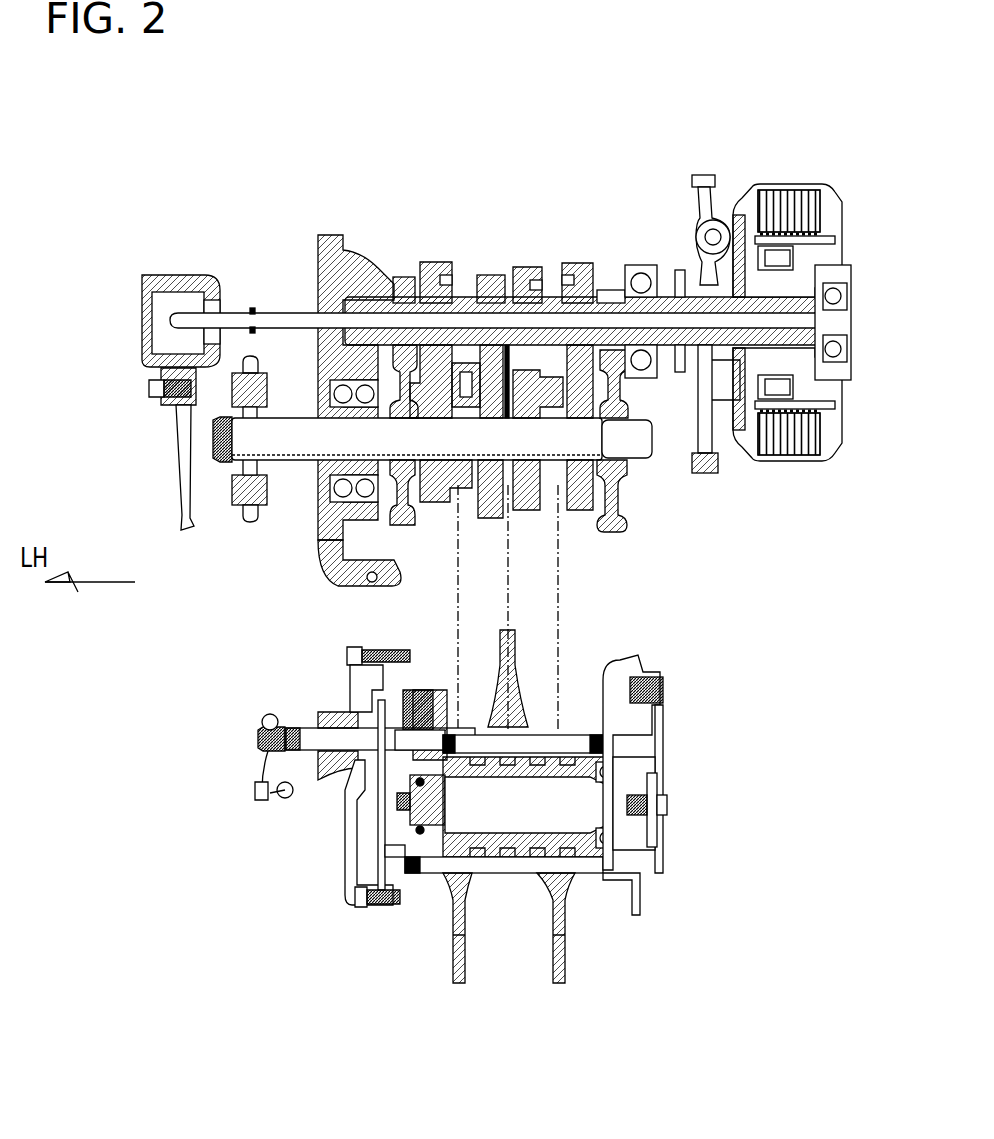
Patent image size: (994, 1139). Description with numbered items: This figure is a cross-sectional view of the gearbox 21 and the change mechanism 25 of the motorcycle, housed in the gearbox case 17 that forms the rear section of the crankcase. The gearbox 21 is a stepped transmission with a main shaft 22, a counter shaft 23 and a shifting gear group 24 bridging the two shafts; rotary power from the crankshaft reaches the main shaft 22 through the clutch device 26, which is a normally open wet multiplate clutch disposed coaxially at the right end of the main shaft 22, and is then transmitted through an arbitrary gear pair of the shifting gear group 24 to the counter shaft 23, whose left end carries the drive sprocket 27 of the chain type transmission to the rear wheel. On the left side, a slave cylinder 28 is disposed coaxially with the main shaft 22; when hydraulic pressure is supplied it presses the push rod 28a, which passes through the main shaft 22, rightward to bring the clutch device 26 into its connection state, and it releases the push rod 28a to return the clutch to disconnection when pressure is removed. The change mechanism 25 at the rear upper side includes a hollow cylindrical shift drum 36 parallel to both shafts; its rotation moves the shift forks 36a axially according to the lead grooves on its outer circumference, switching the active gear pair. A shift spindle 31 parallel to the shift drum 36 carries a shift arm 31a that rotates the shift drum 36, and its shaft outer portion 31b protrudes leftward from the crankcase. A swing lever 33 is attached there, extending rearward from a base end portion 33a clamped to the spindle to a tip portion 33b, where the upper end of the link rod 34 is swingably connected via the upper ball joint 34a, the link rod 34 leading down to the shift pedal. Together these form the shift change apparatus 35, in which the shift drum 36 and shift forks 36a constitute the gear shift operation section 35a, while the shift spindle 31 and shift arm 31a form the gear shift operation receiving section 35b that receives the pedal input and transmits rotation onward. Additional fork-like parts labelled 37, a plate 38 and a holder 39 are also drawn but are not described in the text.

The gearbox case 17 is at (316, 256).
The gearbox 21 is at (397, 145).
The main shaft 22 is at (556, 302).
The counter shaft 23 is at (440, 435).
The shifting gear group 24 is at (519, 260).
The change mechanism 25 is at (222, 685).
The clutch device 26 is at (789, 178).
The drive sprocket 27 is at (249, 520).
The slave cylinder 28 is at (148, 275).
The push rod 28a is at (467, 330).
The shift spindle 31 is at (301, 733).
The shift arm 31a is at (375, 814).
The shaft outer portion 31b is at (366, 739).
The swing lever 33 is at (256, 766).
The base end portion 33a is at (262, 722).
The tip portion 33b is at (258, 802).
The link rod 34 is at (235, 860).
The upper ball joint 34a is at (285, 805).
The shift change apparatus 35 is at (343, 1055).
The gear shift operation section 35a is at (372, 940).
The gear shift operation receiving section 35b is at (300, 860).
The shift drum 36 is at (555, 770).
The shift forks 36a is at (512, 680).
The shift fork 37 is at (400, 838).
The stopper plate 38 is at (660, 835).
The shift drum holder 39 is at (665, 740).